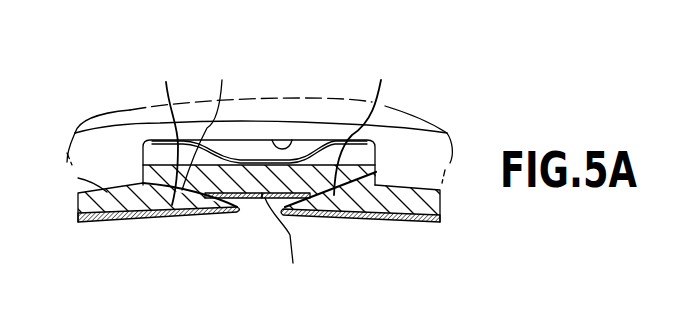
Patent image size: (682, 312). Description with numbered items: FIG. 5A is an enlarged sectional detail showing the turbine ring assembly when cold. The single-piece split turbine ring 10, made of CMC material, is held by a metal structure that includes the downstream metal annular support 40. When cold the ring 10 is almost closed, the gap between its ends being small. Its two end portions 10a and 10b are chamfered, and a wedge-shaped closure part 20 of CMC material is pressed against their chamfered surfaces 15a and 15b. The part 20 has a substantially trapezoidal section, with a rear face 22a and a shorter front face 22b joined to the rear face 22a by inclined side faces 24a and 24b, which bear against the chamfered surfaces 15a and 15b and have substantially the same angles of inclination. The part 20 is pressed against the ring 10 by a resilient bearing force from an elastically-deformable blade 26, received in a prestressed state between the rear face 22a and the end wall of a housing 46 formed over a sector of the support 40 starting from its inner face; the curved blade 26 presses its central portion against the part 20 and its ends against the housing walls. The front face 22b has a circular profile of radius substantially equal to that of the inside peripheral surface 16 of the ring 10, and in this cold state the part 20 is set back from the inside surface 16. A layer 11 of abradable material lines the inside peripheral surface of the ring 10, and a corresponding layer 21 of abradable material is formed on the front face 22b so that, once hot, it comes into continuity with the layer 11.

The split turbine ring 10 is at (249, 228).
The end portion of the ring 10a is at (207, 196).
The end portion of the ring 10b is at (334, 195).
The layer of abradable material 11 is at (98, 224).
The chamfered surface 15a is at (165, 127).
The chamfered surface 15b is at (372, 121).
The inside peripheral surface of the ring 16 is at (433, 222).
The wedge-shaped closure part 20 is at (282, 154).
The layer of abradable material 21 is at (242, 198).
The rear face 22a is at (212, 118).
The front face 22b is at (287, 248).
The inclined side face 24a is at (172, 205).
The inclined side face 24b is at (350, 213).
The elastically-deformable blade 26 is at (305, 140).
The downstream metal annular support 40 is at (407, 153).
The housing 46 is at (292, 140).